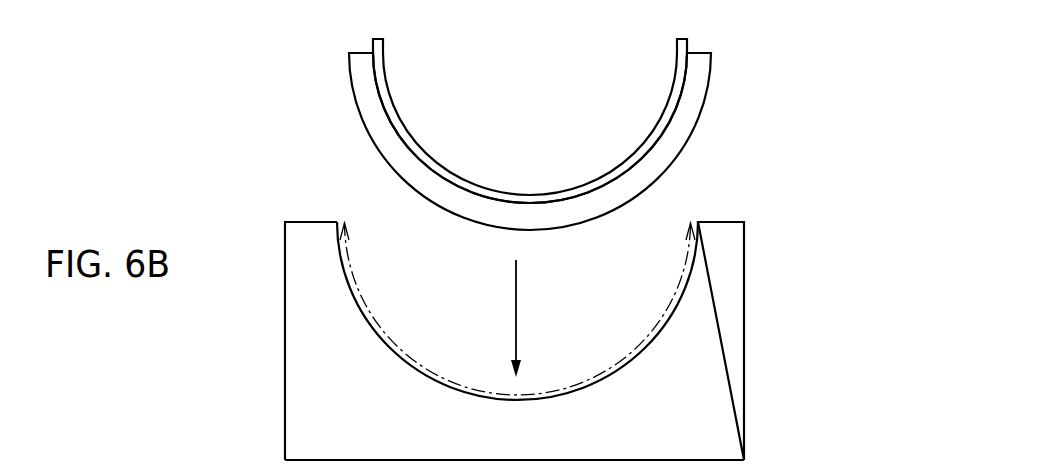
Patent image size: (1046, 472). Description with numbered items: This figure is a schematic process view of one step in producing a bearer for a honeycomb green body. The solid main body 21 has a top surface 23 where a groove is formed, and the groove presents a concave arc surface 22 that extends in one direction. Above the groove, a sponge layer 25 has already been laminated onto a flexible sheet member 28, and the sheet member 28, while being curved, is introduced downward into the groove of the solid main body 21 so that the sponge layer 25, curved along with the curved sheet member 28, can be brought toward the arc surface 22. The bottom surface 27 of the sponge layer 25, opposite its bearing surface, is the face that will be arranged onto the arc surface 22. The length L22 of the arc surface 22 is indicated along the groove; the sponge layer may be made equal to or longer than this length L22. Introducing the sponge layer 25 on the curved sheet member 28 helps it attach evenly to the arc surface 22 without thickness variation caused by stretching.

The solid main body 21 is at (746, 410).
The arc surface 22 is at (690, 275).
The top surface 23 is at (731, 222).
The sponge layer 25 is at (697, 90).
The bottom surface 27 is at (430, 203).
The sheet member 28 is at (681, 52).
The length of the arc surface L22 is at (638, 340).